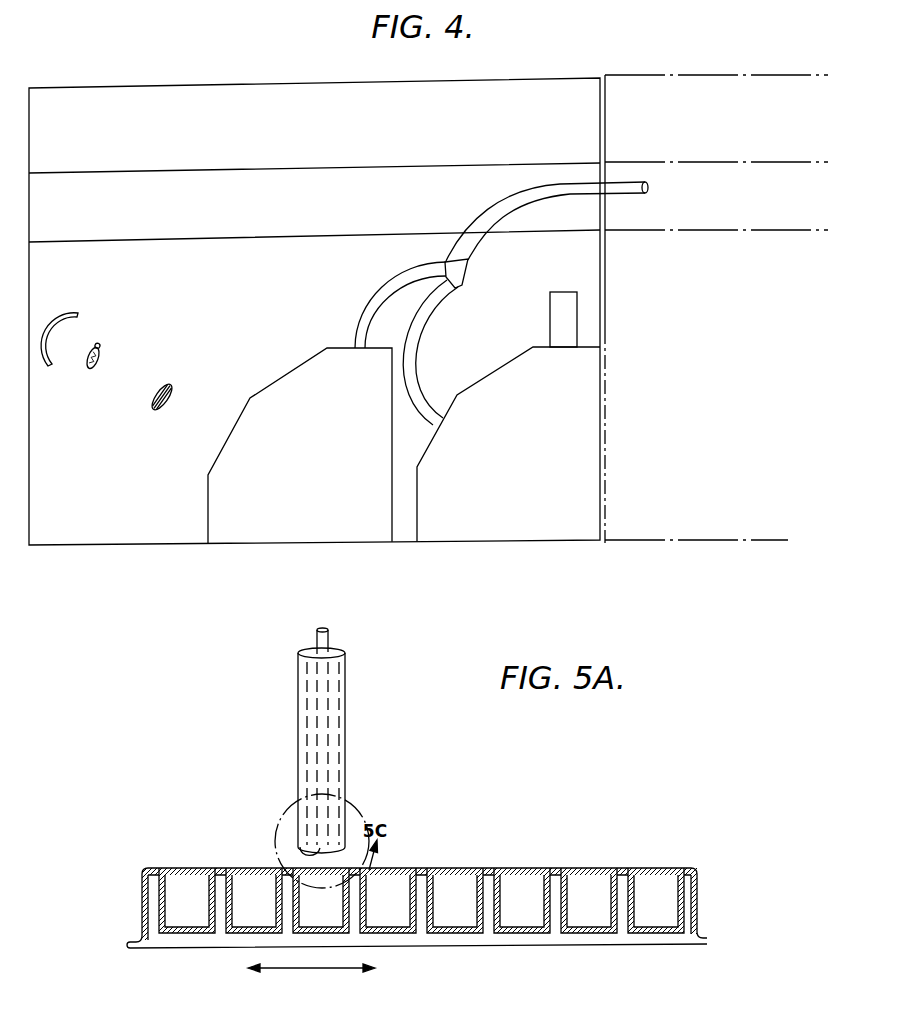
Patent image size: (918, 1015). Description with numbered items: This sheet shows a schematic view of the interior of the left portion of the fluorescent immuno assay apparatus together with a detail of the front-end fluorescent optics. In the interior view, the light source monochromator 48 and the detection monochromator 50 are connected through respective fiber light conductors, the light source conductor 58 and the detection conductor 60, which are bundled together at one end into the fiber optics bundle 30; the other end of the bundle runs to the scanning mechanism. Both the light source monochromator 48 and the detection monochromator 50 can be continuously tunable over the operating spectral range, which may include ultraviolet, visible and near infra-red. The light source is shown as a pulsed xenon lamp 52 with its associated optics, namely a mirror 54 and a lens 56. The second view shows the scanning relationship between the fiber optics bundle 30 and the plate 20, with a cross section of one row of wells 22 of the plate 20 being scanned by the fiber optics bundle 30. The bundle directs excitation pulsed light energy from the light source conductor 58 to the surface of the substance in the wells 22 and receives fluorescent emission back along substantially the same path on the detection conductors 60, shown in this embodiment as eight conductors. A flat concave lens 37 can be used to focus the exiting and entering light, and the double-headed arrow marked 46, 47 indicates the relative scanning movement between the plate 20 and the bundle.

In FIG. 5A, the plate 20 is at (211, 862).
In FIG. 5A, the wells 22 is at (455, 880).
In FIG. 4, the fiber optics bundle 30 is at (623, 205).
In FIG. 5A, the fiber optics bundle 30 is at (298, 683).
In FIG. 5A, the flat concave lens 37 is at (280, 832).
In FIG. 5A, the direction of plate movement 46 is at (266, 973).
In FIG. 5A, the direction of plate movement 47 is at (358, 973).
In FIG. 4, the light source monochromator 48 is at (291, 365).
In FIG. 4, the detection monochromator 50 is at (606, 440).
In FIG. 4, the pulsed xenon lamp 52 is at (101, 369).
In FIG. 4, the mirror 54 is at (75, 313).
In FIG. 4, the lens 56 is at (172, 387).
In FIG. 4, the light source conductor 58 is at (418, 272).
In FIG. 4, the detection conductor 60 is at (440, 312).